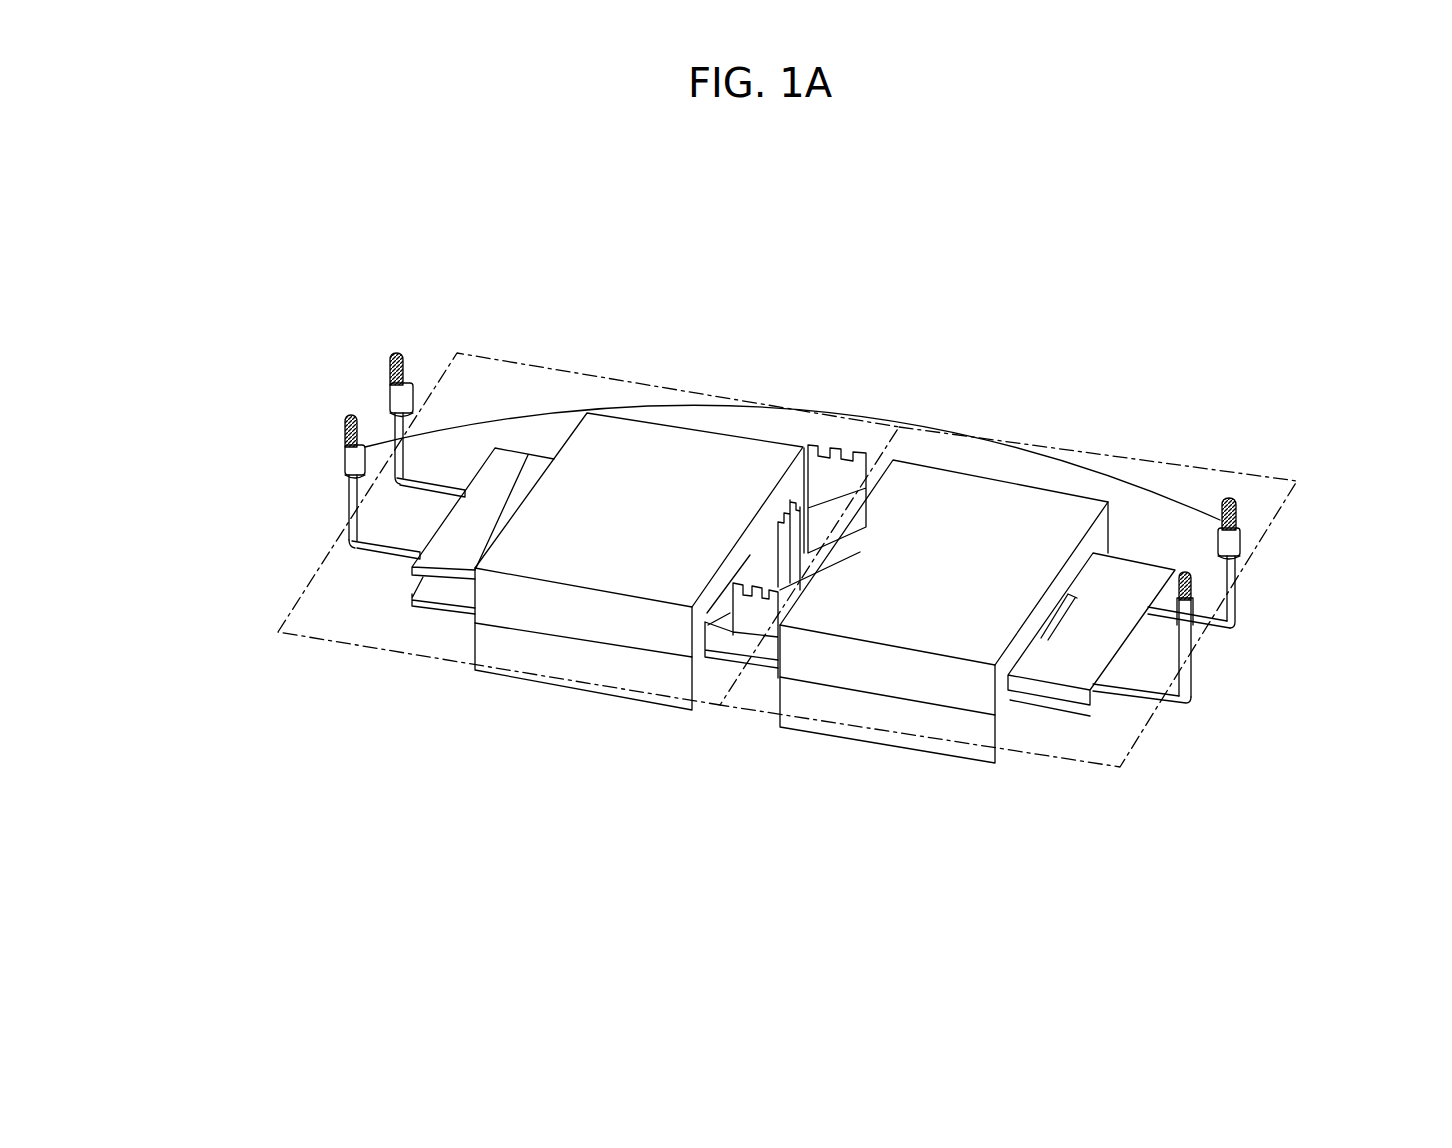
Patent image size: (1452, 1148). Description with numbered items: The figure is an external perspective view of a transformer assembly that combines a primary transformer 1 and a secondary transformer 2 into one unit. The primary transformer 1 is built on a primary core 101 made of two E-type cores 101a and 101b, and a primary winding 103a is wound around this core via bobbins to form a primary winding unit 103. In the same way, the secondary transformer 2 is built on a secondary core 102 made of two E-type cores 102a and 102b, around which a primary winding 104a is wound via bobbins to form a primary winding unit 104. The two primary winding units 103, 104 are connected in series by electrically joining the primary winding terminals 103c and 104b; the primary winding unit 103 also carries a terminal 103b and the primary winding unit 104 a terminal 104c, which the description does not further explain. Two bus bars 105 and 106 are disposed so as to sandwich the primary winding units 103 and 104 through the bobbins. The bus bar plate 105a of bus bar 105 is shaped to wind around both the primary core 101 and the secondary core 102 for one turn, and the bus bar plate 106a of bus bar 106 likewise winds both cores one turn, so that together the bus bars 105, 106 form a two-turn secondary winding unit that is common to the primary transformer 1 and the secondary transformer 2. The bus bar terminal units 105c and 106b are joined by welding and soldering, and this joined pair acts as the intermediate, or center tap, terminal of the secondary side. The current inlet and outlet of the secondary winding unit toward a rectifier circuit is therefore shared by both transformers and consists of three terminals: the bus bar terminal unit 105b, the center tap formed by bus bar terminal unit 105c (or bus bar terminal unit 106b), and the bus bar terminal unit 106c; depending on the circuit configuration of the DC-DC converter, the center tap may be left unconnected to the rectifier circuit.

The primary transformer 1 is at (640, 687).
The secondary transformer 2 is at (1120, 767).
The primary core 101 is at (580, 621).
The core 101a is at (500, 596).
The core 101b is at (613, 662).
The secondary core 102 is at (944, 693).
The core 102a is at (843, 668).
The core 102b is at (950, 735).
The primary winding unit 103 is at (310, 446).
The primary winding 103a is at (350, 542).
The first terminal upper pin 103b is at (395, 397).
The primary winding terminal 103c is at (347, 463).
The primary winding unit 104 is at (1250, 650).
The primary winding 104a is at (1190, 693).
The primary winding terminal 104b is at (1222, 518).
The second terminal lower pin 104c is at (1193, 625).
The bus bar 105 is at (605, 430).
The bus bar plate 105a is at (527, 455).
The bus bar terminal unit 105b is at (757, 547).
The bus bar terminal unit 105c is at (750, 462).
The bus bar 106 is at (954, 436).
The bus bar plate 106a is at (1148, 637).
The bus bar terminal unit 106b is at (733, 552).
The bus bar terminal unit 106c is at (818, 445).